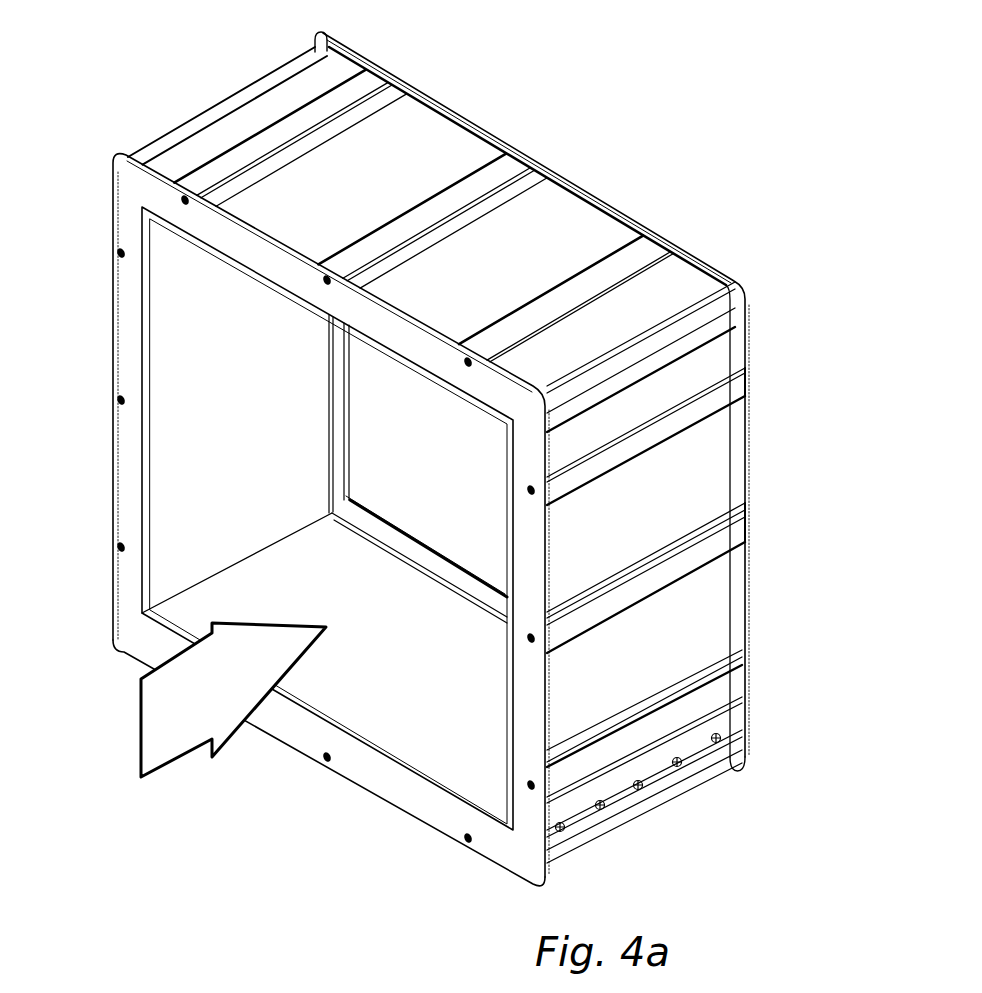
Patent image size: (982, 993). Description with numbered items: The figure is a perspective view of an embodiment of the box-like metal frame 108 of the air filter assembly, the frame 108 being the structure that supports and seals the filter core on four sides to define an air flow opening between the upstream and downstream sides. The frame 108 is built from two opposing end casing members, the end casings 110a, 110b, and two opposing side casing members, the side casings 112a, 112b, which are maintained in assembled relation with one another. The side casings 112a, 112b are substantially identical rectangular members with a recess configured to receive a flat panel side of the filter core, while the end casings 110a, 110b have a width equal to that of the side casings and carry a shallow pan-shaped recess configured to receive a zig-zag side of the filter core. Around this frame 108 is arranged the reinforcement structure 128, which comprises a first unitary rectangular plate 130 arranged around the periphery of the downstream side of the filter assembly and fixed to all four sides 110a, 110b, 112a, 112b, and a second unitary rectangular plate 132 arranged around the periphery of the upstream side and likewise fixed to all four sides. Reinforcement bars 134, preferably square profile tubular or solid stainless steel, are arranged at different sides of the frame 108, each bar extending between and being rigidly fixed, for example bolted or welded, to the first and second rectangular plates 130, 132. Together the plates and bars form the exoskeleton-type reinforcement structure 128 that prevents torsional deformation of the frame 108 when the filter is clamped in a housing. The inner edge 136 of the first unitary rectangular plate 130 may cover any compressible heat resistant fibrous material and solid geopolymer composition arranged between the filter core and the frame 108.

The box-like metal frame 108 is at (580, 238).
The end casing 110a is at (402, 722).
The end casing 110b is at (443, 97).
The side casing 112a is at (175, 449).
The side casing 112b is at (683, 487).
The reinforcement structure 128 is at (533, 147).
The first unitary rectangular plate 130 is at (450, 817).
The second unitary rectangular plate 132 is at (713, 267).
The reinforcement bars 134 is at (372, 84).
The inner edge 136 is at (313, 710).